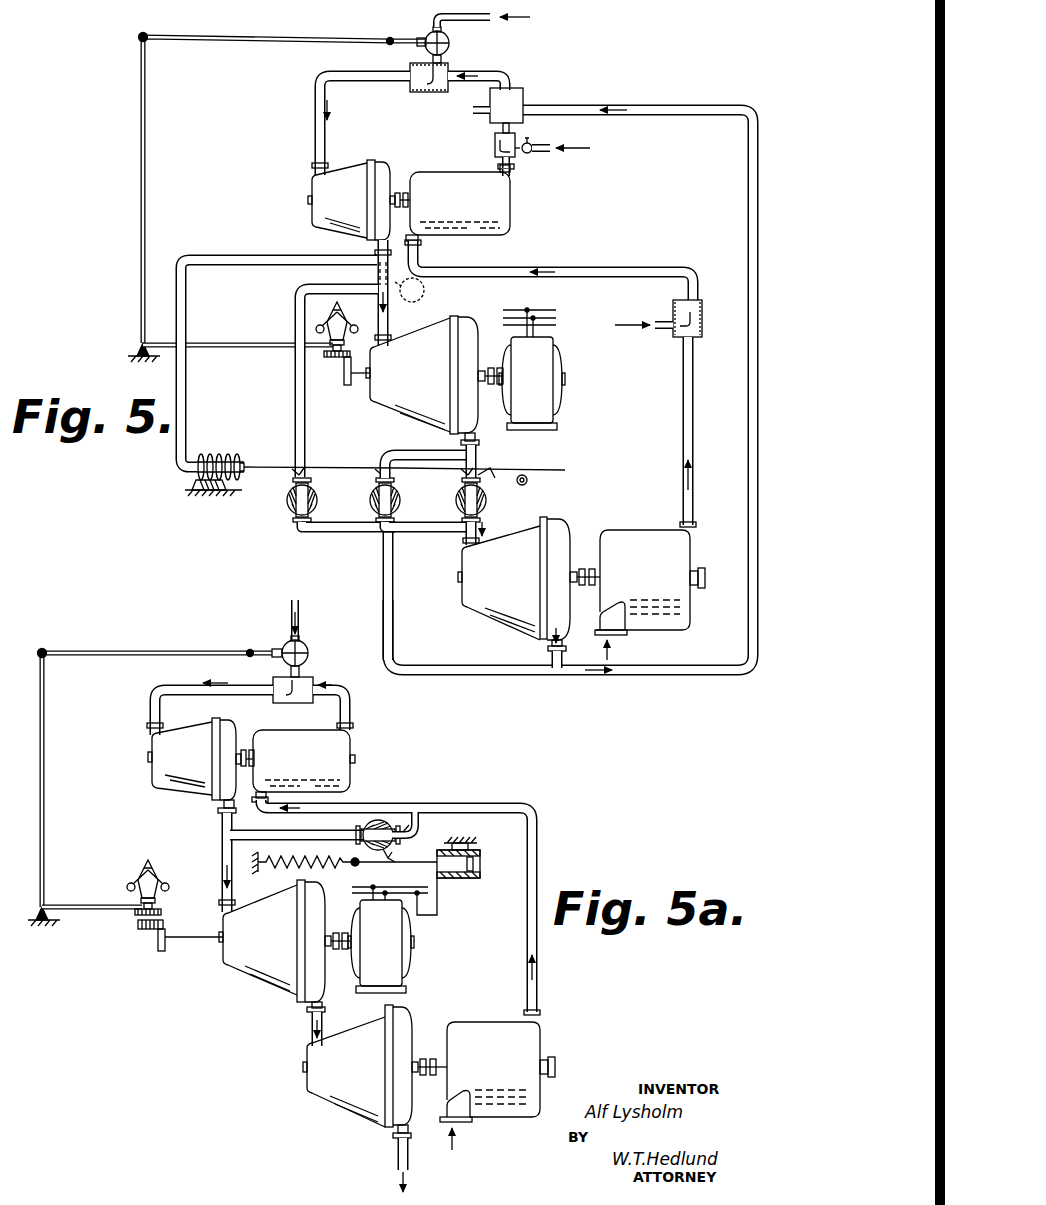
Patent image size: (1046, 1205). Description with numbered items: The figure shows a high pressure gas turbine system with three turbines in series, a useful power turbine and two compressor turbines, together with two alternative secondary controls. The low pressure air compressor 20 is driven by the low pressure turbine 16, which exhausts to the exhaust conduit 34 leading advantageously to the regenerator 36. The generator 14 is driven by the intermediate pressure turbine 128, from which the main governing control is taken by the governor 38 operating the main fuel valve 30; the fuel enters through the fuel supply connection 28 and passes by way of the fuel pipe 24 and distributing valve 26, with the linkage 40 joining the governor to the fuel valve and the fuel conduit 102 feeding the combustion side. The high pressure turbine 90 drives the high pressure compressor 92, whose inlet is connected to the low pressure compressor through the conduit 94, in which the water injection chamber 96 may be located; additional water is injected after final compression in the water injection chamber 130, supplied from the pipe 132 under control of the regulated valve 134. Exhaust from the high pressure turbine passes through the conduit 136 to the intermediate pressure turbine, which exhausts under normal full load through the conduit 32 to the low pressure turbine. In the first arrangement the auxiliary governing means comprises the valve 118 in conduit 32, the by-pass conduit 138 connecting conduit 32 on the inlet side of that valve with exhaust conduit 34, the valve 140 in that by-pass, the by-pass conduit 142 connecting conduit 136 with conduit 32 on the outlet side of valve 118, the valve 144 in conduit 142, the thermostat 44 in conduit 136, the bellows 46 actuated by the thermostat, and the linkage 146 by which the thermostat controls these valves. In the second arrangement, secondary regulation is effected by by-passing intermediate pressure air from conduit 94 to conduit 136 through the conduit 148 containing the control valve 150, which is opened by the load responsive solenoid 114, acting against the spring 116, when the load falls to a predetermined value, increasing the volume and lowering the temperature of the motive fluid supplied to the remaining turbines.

In FIG. 5, the generator 14 is at (548, 400).
In FIG. 5A, the generator 14 is at (400, 967).
In FIG. 5, the low pressure turbine 16 is at (508, 603).
In FIG. 5A, the low pressure turbine 16 is at (353, 1100).
In FIG. 5, the low pressure air compressor 20 is at (635, 538).
In FIG. 5A, the low pressure air compressor 20 is at (540, 1050).
In FIG. 5, the fuel pipe 24 is at (492, 78).
In FIG. 5, the fuel distributing valve 26 is at (432, 95).
In FIG. 5A, the fuel distributing valve 26 is at (292, 701).
In FIG. 5, the fuel supply pipe 28 is at (478, 22).
In FIG. 5A, the fuel supply pipe 28 is at (300, 627).
In FIG. 5, the main fuel valve 30 is at (430, 34).
In FIG. 5A, the main fuel valve 30 is at (309, 652).
In FIG. 5, the conduit 32 is at (479, 468).
In FIG. 5, the exhaust conduit 34 is at (747, 212).
In FIG. 5A, the exhaust conduit 34 is at (397, 1157).
In FIG. 5, the regenerator 36 is at (520, 92).
In FIG. 5, the governor 38 is at (345, 316).
In FIG. 5A, the governor 38 is at (158, 875).
In FIG. 5, the control linkage 40 is at (293, 41).
In FIG. 5A, the control linkage 40 is at (133, 655).
In FIG. 5, the thermostat 44 is at (410, 290).
In FIG. 5, the bellows 46 is at (228, 457).
In FIG. 5, the high pressure turbine 90 is at (343, 172).
In FIG. 5A, the high pressure turbine 90 is at (188, 742).
In FIG. 5, the high pressure compressor 92 is at (454, 172).
In FIG. 5A, the high pressure compressor 92 is at (351, 752).
In FIG. 5, the conduit 94 is at (615, 268).
In FIG. 5A, the conduit 94 is at (477, 815).
In FIG. 5, the water injection chamber 96 is at (670, 408).
In FIG. 5, the fuel conduit 102 is at (318, 128).
In FIG. 5A, the solenoid 114 is at (481, 870).
In FIG. 5A, the spring 116 is at (290, 870).
In FIG. 5, the valve 118 is at (485, 503).
In FIG. 5, the intermediate pressure turbine 128 is at (410, 409).
In FIG. 5A, the intermediate pressure turbine 128 is at (270, 972).
In FIG. 5, the water injection chamber 130 is at (517, 138).
In FIG. 5, the pipe 132 is at (545, 157).
In FIG. 5, the valve 134 is at (524, 160).
In FIG. 5, the conduit 136 is at (388, 318).
In FIG. 5A, the conduit 136 is at (226, 828).
In FIG. 5, the by-pass conduit 138 is at (392, 587).
In FIG. 5, the valve 140 is at (399, 503).
In FIG. 5, the by-pass conduit 142 is at (306, 414).
In FIG. 5, the valve 144 is at (316, 503).
In FIG. 5, the linkage 146 is at (352, 470).
In FIG. 5A, the conduit 148 is at (297, 838).
In FIG. 5A, the control valve 150 is at (381, 825).